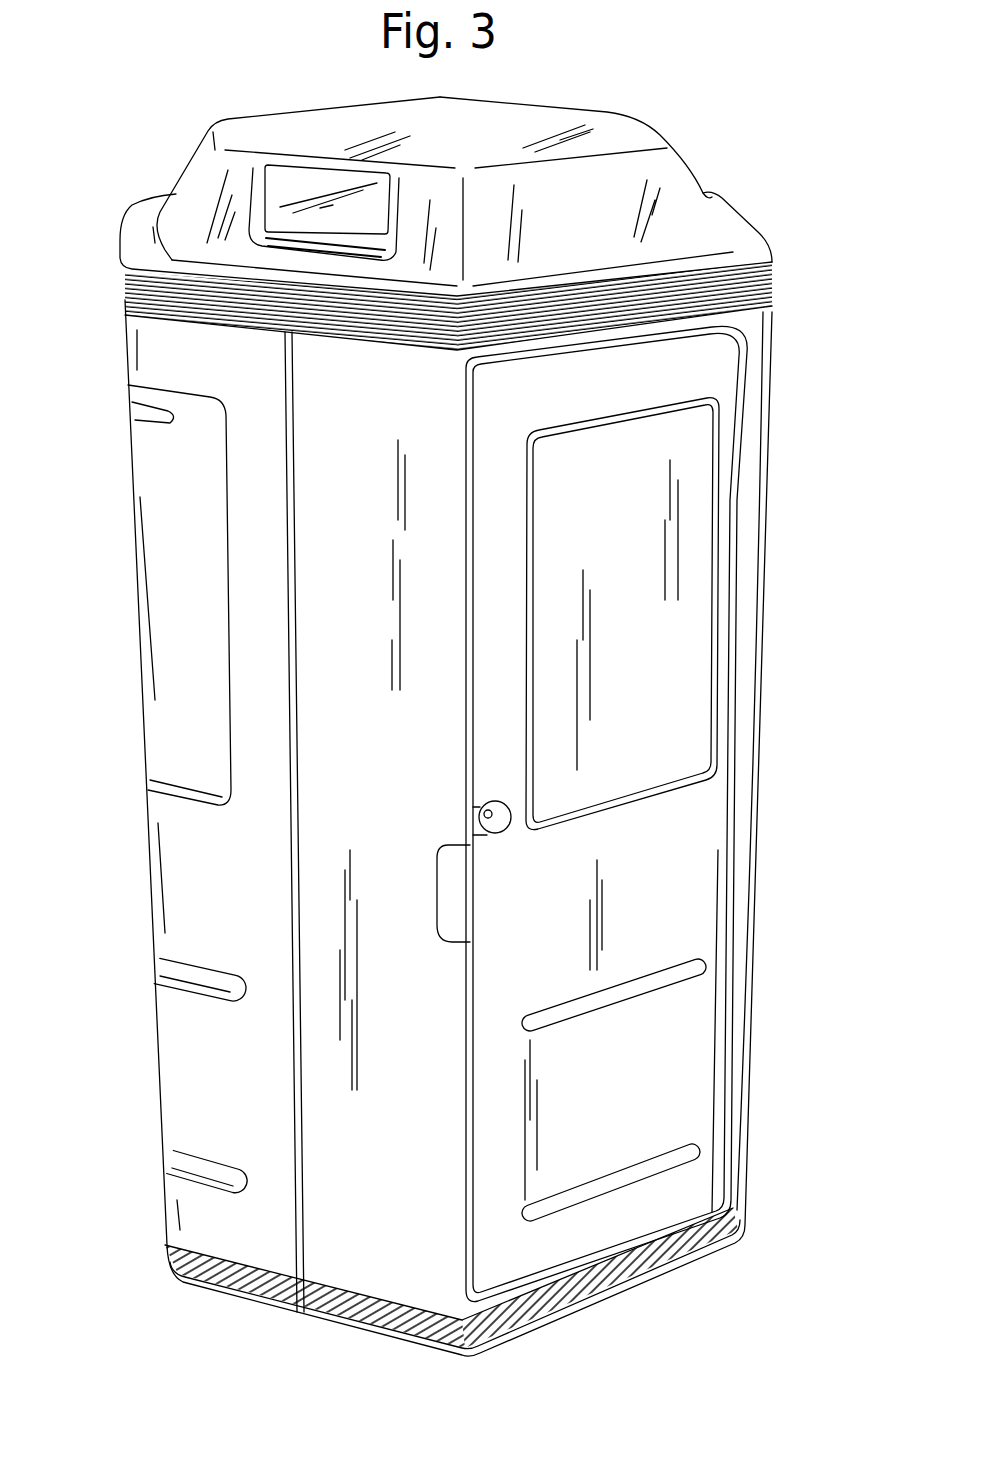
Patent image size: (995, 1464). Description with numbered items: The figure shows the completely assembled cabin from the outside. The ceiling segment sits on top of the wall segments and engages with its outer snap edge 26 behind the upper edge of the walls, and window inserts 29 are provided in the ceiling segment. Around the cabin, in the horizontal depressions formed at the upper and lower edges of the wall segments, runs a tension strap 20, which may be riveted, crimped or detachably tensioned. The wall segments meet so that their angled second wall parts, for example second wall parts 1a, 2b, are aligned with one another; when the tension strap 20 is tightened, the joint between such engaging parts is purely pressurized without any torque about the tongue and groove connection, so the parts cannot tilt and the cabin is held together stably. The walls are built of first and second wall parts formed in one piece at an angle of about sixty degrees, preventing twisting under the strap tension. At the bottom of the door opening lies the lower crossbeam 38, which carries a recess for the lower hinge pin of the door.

The second wall part 1a is at (390, 1287).
The second wall part 2b is at (253, 1253).
The tension strap 20 is at (789, 269).
The snap edge 26 is at (118, 262).
The window inserts 29 is at (308, 177).
The lower crossbeam 38 is at (680, 1260).